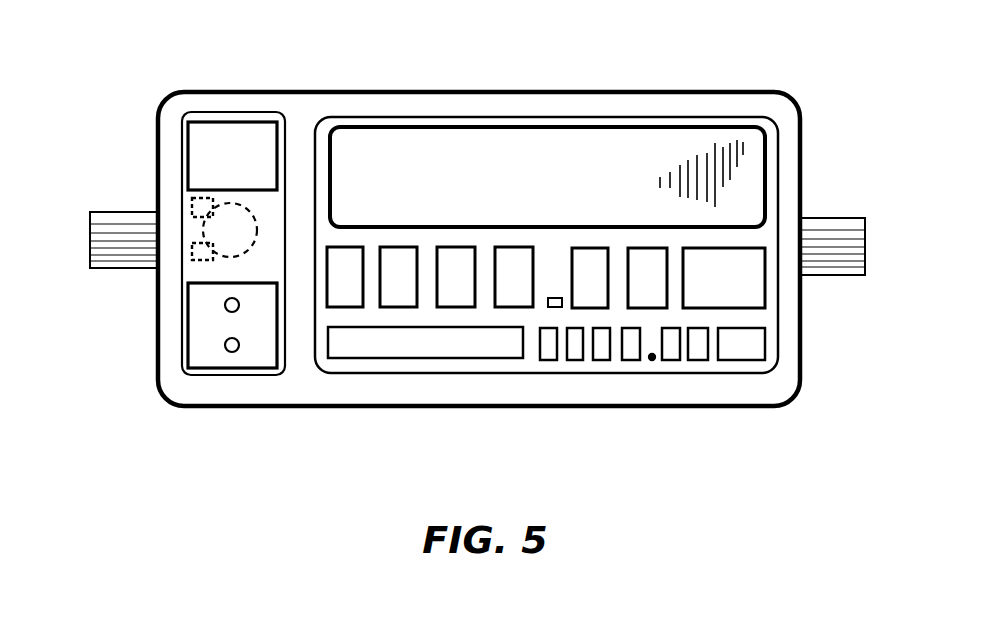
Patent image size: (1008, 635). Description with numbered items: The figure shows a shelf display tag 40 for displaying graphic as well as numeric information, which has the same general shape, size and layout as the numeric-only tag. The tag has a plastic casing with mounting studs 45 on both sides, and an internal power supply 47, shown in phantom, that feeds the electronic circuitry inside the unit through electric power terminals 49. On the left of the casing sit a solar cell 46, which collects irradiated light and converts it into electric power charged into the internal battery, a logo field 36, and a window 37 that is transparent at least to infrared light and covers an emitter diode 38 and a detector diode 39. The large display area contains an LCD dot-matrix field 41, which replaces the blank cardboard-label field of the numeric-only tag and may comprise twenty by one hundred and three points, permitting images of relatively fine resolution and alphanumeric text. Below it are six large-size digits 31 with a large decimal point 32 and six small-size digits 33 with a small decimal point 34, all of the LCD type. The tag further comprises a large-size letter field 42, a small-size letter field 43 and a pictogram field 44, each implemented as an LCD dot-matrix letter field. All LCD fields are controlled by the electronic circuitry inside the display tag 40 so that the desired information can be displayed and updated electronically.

The shelf display tag 40 is at (462, 72).
The LCD dot-matrix field 41 is at (396, 170).
The large-size digits 31 is at (648, 248).
The large decimal point 32 is at (547, 308).
The small-size digits 33 is at (632, 360).
The small decimal point 34 is at (652, 360).
The logo field 36 is at (187, 252).
The window 37 is at (213, 357).
The emitter diode 38 is at (223, 344).
The detector diode 39 is at (223, 304).
The large-size letter field 42 is at (758, 294).
The small-size letter field 43 is at (735, 356).
The pictogram field 44 is at (355, 348).
The mounting studs 45 is at (88, 216).
The solar cell 46 is at (249, 160).
The internal power supply 47 is at (133, 273).
The electric power terminals 49 is at (225, 190).